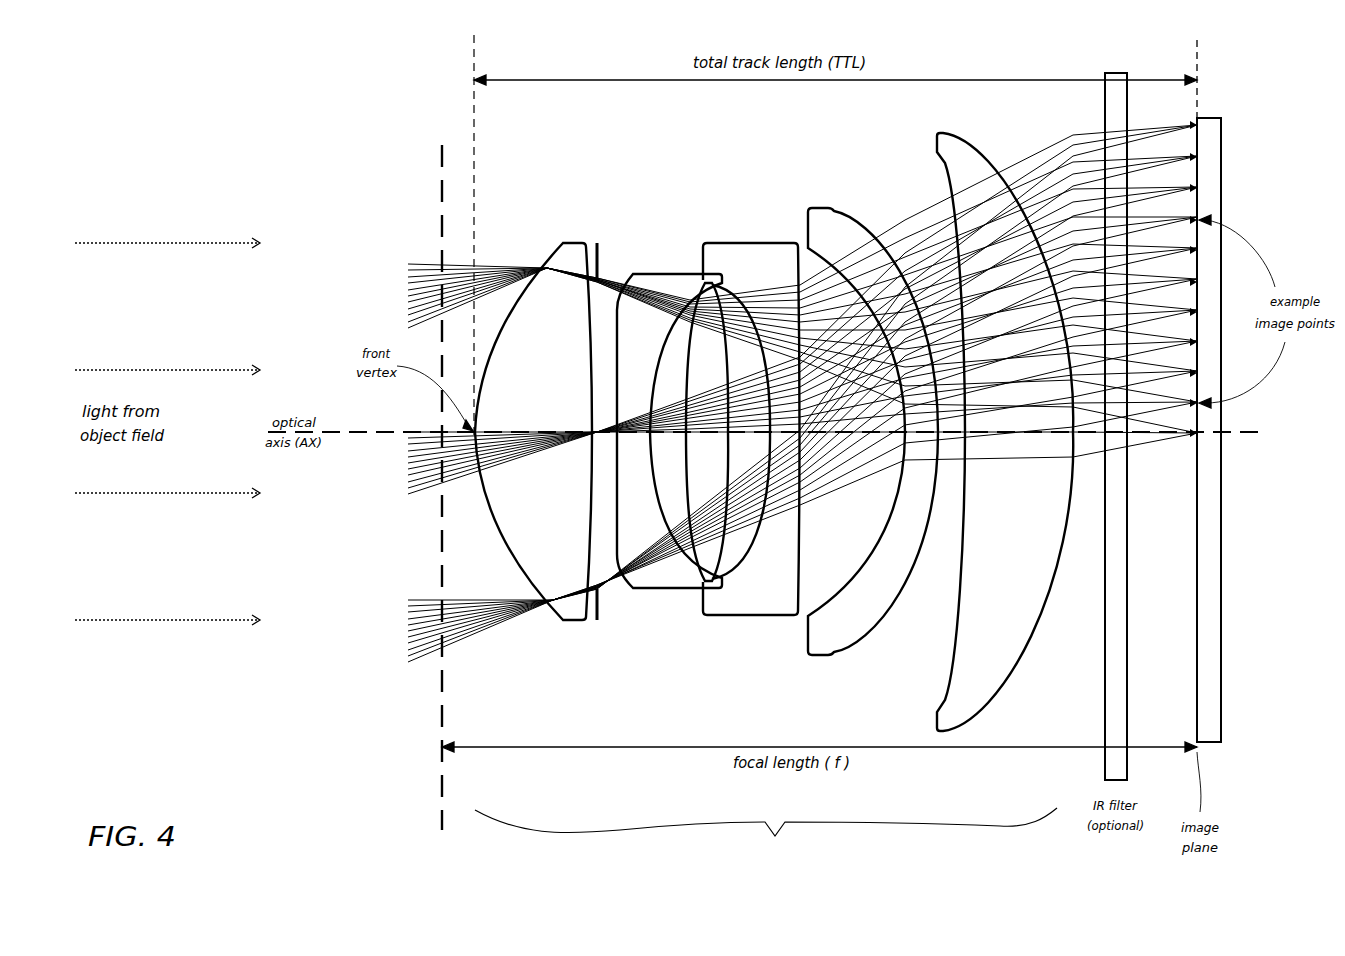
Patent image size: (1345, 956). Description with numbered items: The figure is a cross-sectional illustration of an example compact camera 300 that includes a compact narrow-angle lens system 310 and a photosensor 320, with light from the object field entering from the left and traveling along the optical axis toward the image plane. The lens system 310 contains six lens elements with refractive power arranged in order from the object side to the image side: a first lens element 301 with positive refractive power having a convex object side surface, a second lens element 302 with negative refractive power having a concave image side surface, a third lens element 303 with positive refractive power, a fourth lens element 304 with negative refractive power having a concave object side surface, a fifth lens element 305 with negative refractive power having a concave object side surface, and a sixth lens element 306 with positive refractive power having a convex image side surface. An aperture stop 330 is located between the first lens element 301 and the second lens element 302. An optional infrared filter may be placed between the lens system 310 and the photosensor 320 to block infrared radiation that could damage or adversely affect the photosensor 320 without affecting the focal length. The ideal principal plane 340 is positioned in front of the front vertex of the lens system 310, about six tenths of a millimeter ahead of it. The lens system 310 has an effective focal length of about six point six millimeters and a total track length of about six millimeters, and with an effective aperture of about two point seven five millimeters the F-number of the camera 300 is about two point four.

The camera 300 is at (342, 145).
The ideal principal plane 340 is at (423, 466).
The first lens element 301 is at (576, 240).
The second lens element 302 is at (655, 274).
The third lens element 303 is at (705, 555).
The fourth lens element 304 is at (744, 243).
The fifth lens element 305 is at (828, 207).
The sixth lens element 306 is at (946, 134).
The aperture stop 330 is at (596, 626).
The photosensor 320 is at (1221, 185).
The compact narrow-angle lens system 310 is at (766, 836).